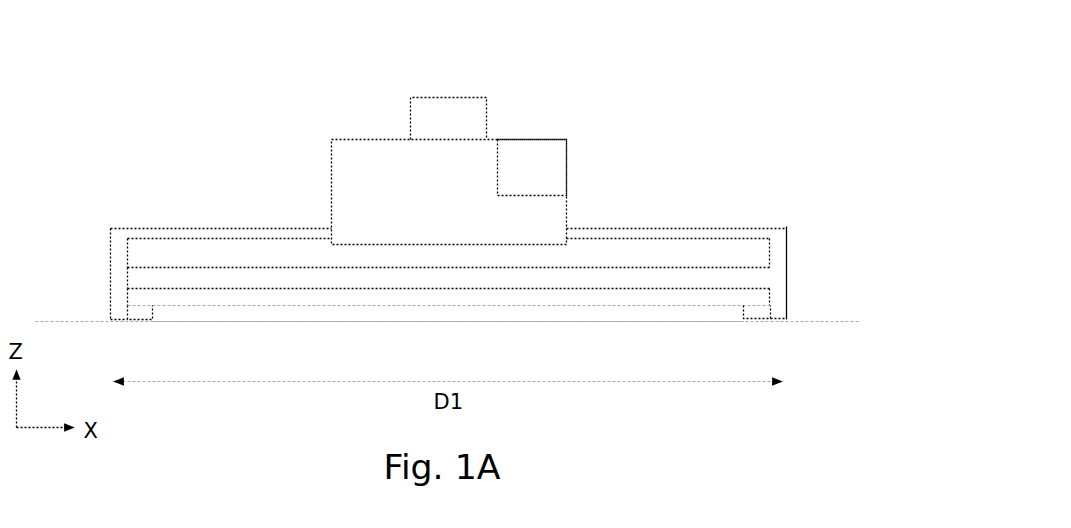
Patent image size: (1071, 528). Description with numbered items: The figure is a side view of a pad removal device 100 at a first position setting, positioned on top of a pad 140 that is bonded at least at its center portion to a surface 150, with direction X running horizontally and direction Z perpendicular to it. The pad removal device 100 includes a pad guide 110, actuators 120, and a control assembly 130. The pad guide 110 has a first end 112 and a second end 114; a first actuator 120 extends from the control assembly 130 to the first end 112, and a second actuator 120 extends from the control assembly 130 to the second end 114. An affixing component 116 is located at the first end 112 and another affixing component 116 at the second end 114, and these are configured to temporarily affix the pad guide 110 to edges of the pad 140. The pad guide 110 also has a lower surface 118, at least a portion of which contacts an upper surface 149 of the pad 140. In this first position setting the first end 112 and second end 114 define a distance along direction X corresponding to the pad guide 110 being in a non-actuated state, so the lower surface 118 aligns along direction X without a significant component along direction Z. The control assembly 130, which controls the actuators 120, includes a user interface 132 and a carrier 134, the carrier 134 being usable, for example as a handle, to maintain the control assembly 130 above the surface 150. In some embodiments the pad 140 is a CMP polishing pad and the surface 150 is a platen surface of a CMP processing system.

The pad removal device 100 is at (711, 78).
The pad guide 110 is at (201, 277).
The first end 112 is at (108, 262).
The second end 114 is at (788, 256).
The affixing component 116 is at (127, 303).
The lower surface 118 is at (265, 290).
The actuator 120 is at (126, 226).
The control assembly 130 is at (468, 204).
The user interface 132 is at (552, 180).
The carrier 134 is at (418, 118).
The pad 140 is at (650, 312).
The upper surface 149 is at (586, 303).
The surface 150 is at (838, 321).